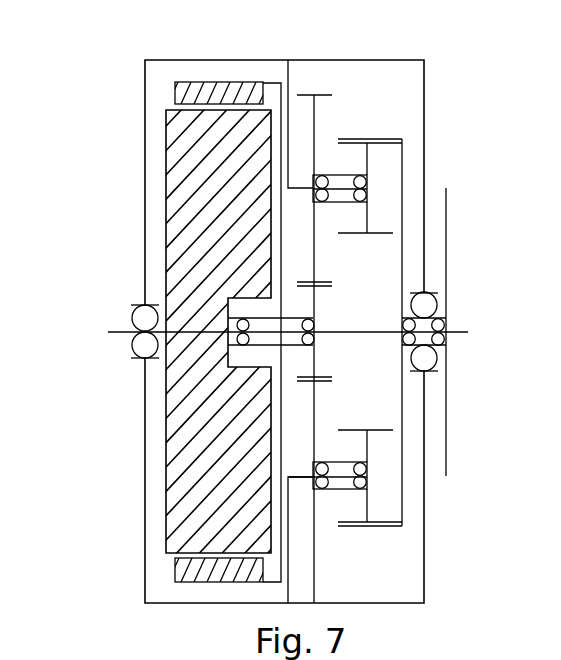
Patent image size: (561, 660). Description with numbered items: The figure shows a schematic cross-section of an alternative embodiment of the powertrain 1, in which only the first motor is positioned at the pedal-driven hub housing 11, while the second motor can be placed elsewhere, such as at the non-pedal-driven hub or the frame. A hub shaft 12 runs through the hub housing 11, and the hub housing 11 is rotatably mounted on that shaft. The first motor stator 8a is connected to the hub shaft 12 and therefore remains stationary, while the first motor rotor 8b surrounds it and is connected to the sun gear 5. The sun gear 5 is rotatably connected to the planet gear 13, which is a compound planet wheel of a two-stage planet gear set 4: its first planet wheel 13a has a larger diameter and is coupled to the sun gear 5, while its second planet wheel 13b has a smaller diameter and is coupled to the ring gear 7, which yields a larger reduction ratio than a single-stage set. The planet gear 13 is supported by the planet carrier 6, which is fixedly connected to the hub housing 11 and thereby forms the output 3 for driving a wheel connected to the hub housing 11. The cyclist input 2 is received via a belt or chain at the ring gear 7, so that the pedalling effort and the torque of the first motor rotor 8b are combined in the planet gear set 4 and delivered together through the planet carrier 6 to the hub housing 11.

The powertrain 1 is at (283, 330).
The cyclist input 2 is at (448, 207).
The output 3 is at (145, 191).
The planet gear set 4 is at (385, 341).
The sun gear 5 is at (326, 304).
The planet carrier 6 is at (342, 480).
The ring gear 7 is at (407, 178).
The first motor stator 8a is at (206, 436).
The first motor rotor 8b is at (222, 95).
The hub housing 11 is at (145, 209).
The hub shaft 12 is at (462, 325).
The planet gear 13 is at (342, 497).
The first planet wheel 13a is at (322, 87).
The second planet wheel 13b is at (377, 153).